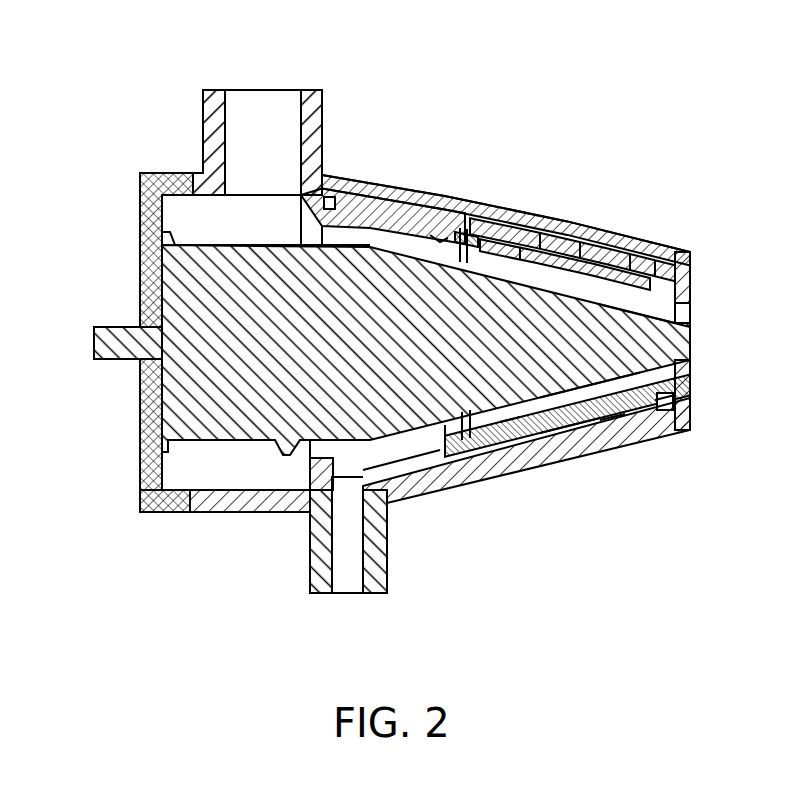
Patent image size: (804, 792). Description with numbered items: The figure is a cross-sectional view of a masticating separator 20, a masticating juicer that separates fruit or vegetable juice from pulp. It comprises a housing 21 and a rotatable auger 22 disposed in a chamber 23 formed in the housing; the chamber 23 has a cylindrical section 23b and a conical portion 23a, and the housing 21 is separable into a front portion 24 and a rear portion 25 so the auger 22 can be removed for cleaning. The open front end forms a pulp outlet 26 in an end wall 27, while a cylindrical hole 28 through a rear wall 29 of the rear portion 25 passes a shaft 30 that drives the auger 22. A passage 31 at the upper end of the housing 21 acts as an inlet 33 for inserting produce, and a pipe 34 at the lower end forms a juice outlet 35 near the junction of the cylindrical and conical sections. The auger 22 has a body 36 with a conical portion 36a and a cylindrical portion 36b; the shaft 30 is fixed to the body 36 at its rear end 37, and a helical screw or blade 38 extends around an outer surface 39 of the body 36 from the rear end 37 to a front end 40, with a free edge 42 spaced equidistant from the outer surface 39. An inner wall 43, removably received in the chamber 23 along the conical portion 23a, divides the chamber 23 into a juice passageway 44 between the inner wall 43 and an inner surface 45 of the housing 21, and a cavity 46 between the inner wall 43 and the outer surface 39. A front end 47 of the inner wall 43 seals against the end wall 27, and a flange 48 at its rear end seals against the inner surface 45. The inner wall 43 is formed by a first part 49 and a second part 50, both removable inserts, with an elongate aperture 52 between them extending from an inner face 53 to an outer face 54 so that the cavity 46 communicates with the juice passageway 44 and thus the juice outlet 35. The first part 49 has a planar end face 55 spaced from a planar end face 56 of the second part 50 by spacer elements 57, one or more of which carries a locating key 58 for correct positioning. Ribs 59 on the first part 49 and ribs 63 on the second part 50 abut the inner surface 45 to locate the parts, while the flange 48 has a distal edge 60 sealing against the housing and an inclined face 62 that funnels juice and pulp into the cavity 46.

The masticating separator 20 is at (704, 92).
The housing 21 is at (575, 240).
The rotatable auger 22 is at (535, 402).
The chamber 23 is at (415, 450).
The conical portion 23a is at (500, 210).
The cylindrical section 23b is at (248, 474).
The front portion 24 is at (635, 243).
The rear portion 25 is at (140, 245).
The pulp outlet 26 is at (690, 318).
The end wall 27 is at (690, 283).
The cylindrical hole 28 is at (140, 372).
The rear wall 29 is at (140, 482).
The shaft 30 is at (95, 343).
The passage 31 is at (200, 128).
The inlet 33 is at (262, 120).
The pipe 34 is at (380, 578).
The juice outlet 35 is at (356, 598).
The body 36 is at (175, 292).
The conical portion 36a is at (608, 395).
The cylindrical portion 36b is at (178, 490).
The rear end 37 is at (140, 425).
The helical screw or blade 38 is at (520, 250).
The outer surface 39 is at (560, 455).
The front end 40 is at (690, 345).
The free edge 42 is at (655, 260).
The inner wall 43 is at (595, 250).
The juice passageway 44 is at (395, 478).
The inner surface 45 is at (675, 435).
The cavity 46 is at (663, 432).
The front end 47 is at (690, 392).
The flange 48 is at (333, 188).
The first part 49 is at (462, 400).
The second part 50 is at (692, 257).
The elongate aperture 52 is at (462, 232).
The inner face 53 is at (512, 245).
The outer face 54 is at (545, 250).
The planar end face 55 is at (432, 232).
The planar end face 56 is at (470, 245).
The spacer elements 57 is at (468, 418).
The locating key 58 is at (510, 425).
The ribs 59 is at (388, 178).
The distal edge 60 is at (350, 583).
The inclined face 62 is at (312, 470).
The ribs 63 is at (615, 440).